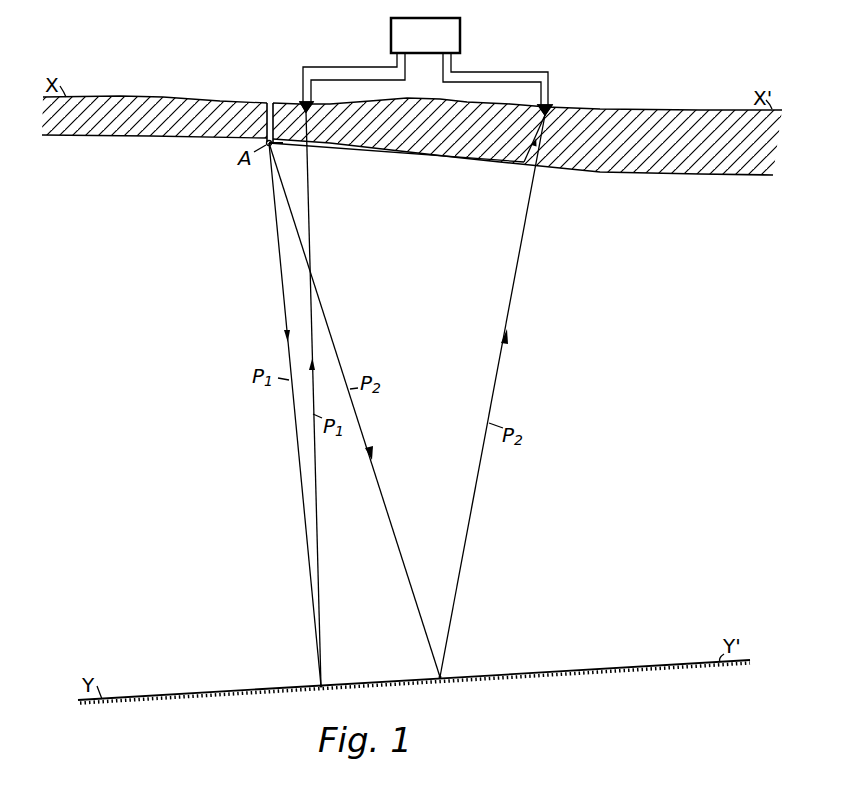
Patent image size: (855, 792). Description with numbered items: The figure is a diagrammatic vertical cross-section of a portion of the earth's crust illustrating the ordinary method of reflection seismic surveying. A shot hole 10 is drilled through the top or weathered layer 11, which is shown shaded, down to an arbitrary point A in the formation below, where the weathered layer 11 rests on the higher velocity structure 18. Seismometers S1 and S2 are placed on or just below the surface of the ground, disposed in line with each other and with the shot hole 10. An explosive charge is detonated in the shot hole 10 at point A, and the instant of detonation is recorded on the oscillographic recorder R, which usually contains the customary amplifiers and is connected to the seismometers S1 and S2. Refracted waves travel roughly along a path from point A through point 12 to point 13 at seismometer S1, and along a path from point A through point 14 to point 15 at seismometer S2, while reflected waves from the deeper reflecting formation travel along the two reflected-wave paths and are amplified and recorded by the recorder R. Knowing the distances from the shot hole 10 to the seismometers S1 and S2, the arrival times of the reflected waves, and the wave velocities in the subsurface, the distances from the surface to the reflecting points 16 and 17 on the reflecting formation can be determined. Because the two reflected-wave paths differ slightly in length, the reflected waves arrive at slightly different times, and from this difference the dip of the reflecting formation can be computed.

The shot hole 10 is at (264, 103).
The weathered layer 11 is at (628, 128).
The refracted wave path point 12 is at (298, 145).
The refracted wave path point 13 is at (311, 105).
The refracted wave path point 14 is at (524, 163).
The refracted wave path point 15 is at (540, 105).
The reflecting point 16 is at (318, 684).
The reflecting point 17 is at (441, 678).
The higher velocity structure 18 is at (652, 197).
The oscillographic recorder R is at (425, 61).
The seismometer S1 is at (303, 104).
The seismometer S2 is at (552, 106).